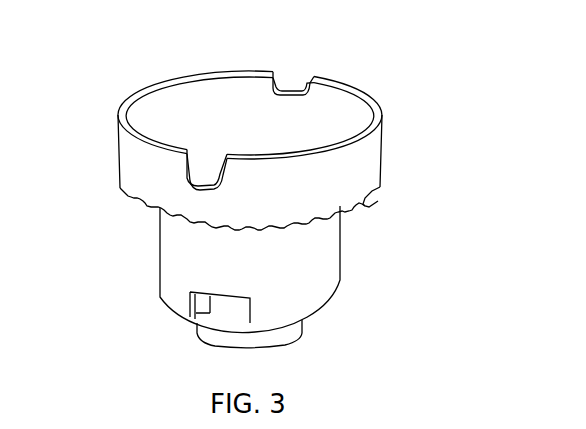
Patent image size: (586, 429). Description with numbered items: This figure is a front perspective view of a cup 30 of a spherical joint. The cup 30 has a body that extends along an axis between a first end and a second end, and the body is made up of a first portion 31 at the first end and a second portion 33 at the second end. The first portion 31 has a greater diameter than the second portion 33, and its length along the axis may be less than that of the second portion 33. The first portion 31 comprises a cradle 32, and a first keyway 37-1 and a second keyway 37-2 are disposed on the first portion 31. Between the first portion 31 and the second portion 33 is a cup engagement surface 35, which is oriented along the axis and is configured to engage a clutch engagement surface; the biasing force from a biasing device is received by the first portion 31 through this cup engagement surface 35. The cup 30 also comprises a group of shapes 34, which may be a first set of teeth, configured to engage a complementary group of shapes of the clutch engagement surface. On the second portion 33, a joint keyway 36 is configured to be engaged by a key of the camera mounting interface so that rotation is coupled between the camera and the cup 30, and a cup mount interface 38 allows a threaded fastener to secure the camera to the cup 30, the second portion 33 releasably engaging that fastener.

The cup 30 is at (421, 91).
The first portion 31 is at (119, 135).
The cradle 32 is at (168, 107).
The second portion 33 is at (342, 280).
The group of shapes 34 is at (380, 256).
The cup engagement surface 35 is at (366, 209).
The joint keyway 36 is at (197, 320).
The first keyway 37-1 is at (187, 165).
The second keyway 37-2 is at (280, 83).
The cup mount interface 38 is at (284, 358).